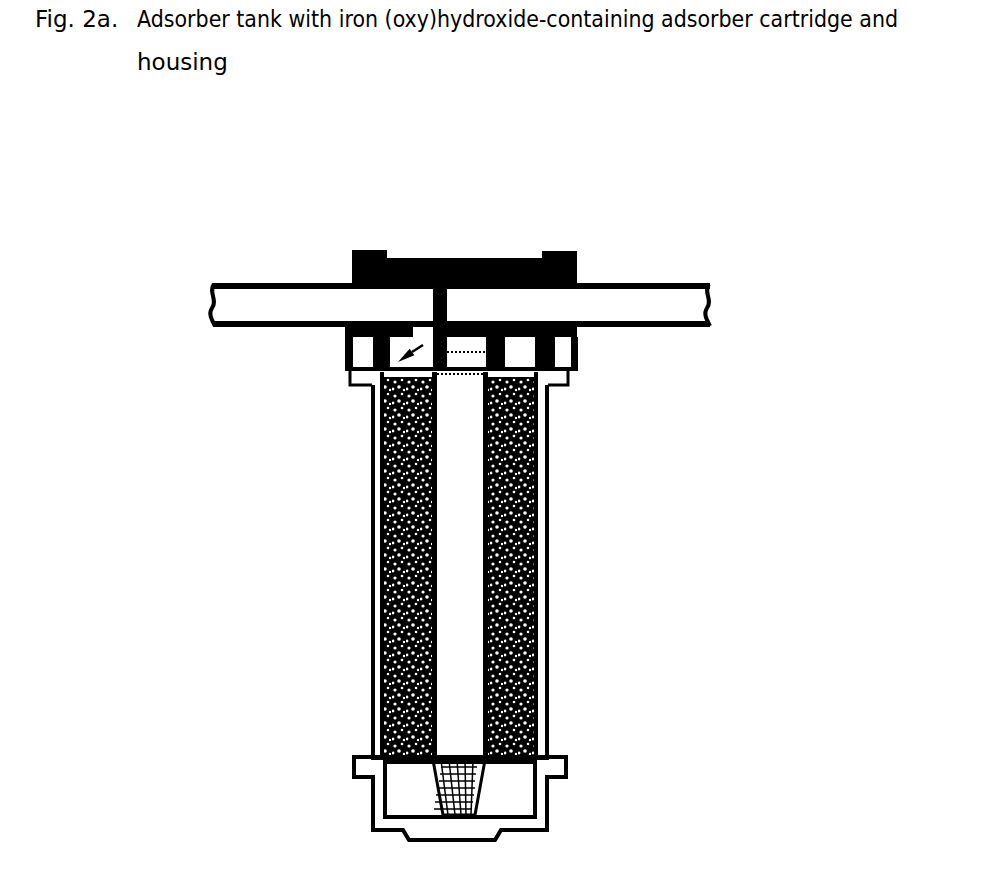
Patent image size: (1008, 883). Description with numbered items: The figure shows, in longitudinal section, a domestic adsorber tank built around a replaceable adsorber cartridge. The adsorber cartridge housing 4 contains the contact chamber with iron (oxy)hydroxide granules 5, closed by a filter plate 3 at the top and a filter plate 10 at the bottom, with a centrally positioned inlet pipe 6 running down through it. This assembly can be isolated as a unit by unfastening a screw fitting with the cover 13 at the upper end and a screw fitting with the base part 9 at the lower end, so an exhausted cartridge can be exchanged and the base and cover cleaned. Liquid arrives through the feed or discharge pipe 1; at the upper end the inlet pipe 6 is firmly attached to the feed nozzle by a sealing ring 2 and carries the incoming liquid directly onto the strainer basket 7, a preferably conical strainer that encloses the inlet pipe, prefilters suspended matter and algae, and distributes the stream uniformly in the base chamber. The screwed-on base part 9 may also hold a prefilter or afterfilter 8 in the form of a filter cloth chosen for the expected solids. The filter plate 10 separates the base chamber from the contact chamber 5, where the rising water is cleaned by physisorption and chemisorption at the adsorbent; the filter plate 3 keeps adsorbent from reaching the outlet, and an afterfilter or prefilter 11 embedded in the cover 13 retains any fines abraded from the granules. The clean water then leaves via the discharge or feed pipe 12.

The feed or discharge pipe 1 is at (745, 302).
The sealing ring 2 is at (520, 357).
The filter plate 3 is at (543, 393).
The adsorber cartridge housing 4 is at (345, 548).
The contact chamber with iron (oxy)hydroxide granules 5 is at (530, 518).
The inlet pipe 6 is at (470, 612).
The strainer basket 7 is at (415, 795).
The prefilter or afterfilter 8 is at (510, 795).
The base part 9 is at (562, 839).
The filter plate 10 is at (530, 730).
The afterfilter or prefilter 11 is at (372, 387).
The discharge or feed pipe 12 is at (188, 300).
The cover 13 is at (600, 252).